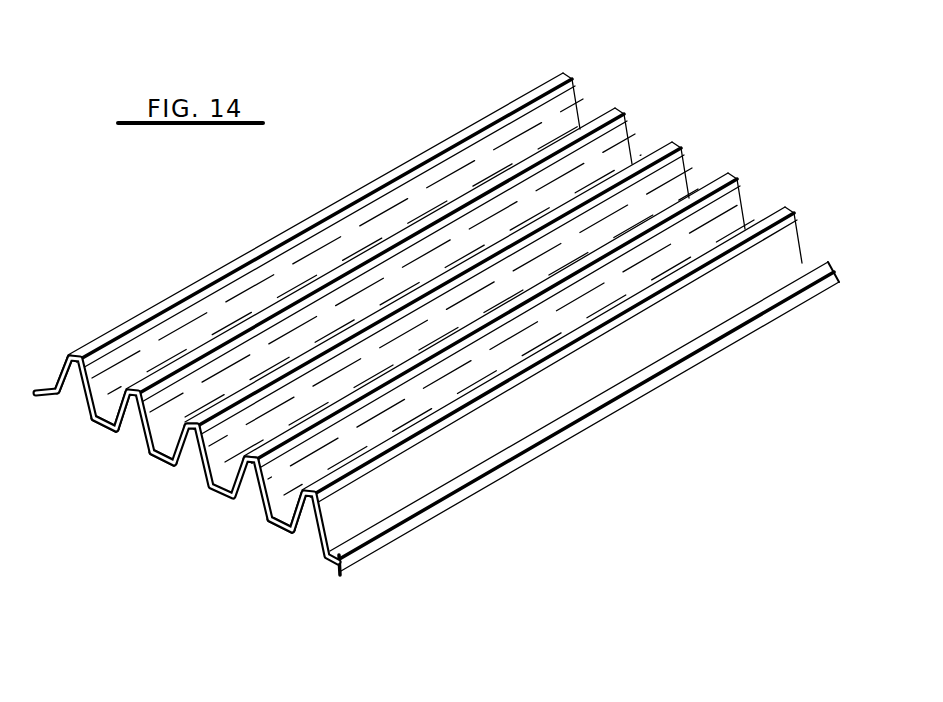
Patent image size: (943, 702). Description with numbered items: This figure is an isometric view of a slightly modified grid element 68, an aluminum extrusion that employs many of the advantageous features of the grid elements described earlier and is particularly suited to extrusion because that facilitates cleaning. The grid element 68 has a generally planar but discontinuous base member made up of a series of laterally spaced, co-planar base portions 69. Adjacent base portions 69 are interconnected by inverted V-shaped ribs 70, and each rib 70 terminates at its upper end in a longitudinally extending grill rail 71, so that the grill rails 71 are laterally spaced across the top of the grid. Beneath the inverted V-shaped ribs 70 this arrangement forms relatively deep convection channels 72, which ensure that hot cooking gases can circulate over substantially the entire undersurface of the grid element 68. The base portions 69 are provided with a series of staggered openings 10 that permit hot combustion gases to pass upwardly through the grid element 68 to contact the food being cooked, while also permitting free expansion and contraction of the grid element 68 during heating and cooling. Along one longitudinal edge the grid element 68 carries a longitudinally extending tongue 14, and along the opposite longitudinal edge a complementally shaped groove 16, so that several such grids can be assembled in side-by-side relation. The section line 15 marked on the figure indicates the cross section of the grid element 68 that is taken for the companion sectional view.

The grid element 68 is at (200, 237).
The base portions 69 is at (270, 506).
The inverted V-shaped ribs 70 is at (775, 257).
The grill rails 71 is at (568, 74).
The convection channels 72 is at (116, 446).
The tongue 14 is at (36, 388).
The groove 16 is at (387, 542).
The staggered openings 10 is at (150, 457).
The section line 15 is at (228, 200).